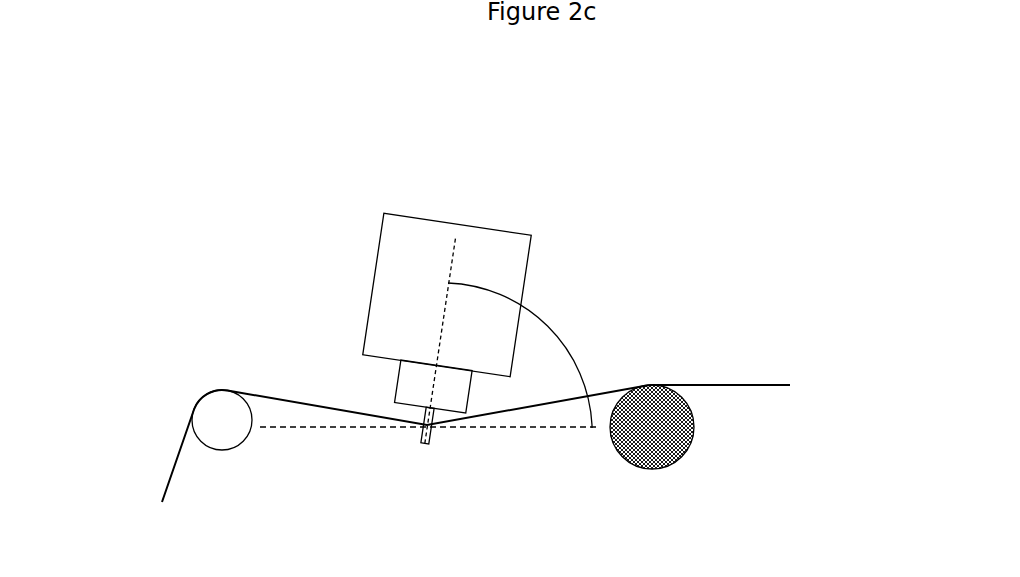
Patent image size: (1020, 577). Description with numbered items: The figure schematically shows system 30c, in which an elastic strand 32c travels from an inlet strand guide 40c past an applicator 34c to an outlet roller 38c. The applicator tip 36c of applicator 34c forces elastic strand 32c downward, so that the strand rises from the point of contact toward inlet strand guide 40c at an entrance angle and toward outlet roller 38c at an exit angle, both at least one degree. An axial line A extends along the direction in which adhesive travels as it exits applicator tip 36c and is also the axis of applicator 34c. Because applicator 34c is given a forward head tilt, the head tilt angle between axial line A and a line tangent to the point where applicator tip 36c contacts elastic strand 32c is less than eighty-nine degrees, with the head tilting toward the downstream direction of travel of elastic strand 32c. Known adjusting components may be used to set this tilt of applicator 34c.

The system 30c is at (592, 114).
The elastic strand 32c is at (283, 395).
The applicator 34c is at (503, 253).
The applicator tip 36c is at (426, 445).
The outlet roller 38c is at (653, 430).
The inlet strand guide 40c is at (220, 420).
The axial line A is at (452, 245).